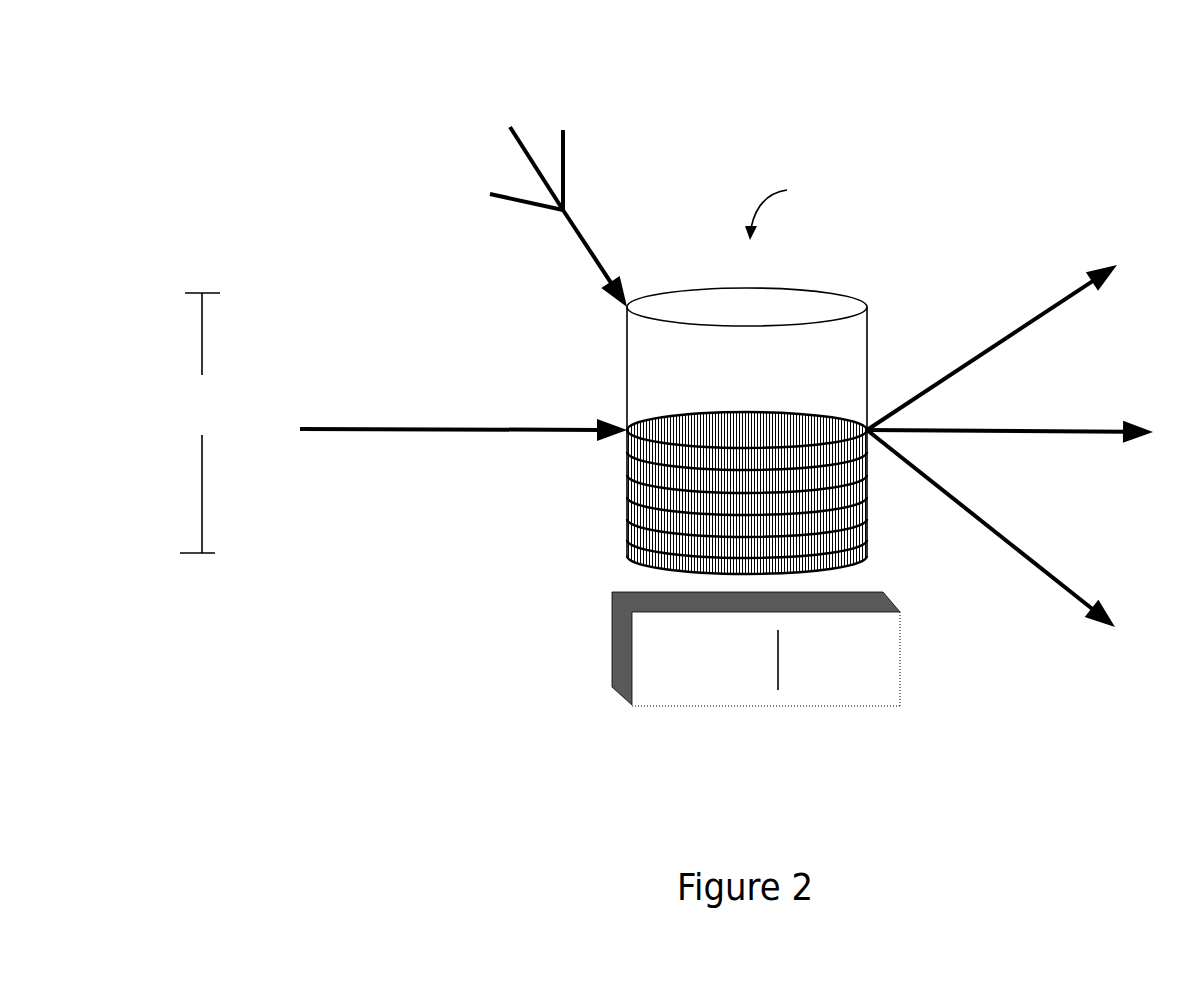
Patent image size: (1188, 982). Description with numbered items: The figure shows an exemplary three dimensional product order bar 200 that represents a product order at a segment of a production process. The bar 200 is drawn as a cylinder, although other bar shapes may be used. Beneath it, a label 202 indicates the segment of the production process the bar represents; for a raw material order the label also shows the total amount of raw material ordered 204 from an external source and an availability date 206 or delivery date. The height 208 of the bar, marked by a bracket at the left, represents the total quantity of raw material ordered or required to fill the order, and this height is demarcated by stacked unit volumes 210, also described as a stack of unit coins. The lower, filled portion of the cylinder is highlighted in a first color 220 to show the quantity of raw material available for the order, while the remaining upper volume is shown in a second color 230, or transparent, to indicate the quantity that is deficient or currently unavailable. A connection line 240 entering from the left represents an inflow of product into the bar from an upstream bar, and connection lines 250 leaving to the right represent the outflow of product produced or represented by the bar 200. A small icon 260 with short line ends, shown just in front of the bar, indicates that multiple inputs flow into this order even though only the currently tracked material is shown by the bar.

The bar 200 is at (794, 207).
The label 202 is at (650, 632).
The total amount of raw material ordered 204 is at (862, 680).
The availability date 206 is at (647, 678).
The height of the bar 208 is at (199, 423).
The unit volumes 210 is at (625, 547).
The first color 220 is at (737, 507).
The second color 230 is at (749, 362).
The connection line 240 is at (463, 417).
The connection lines 250 is at (1010, 446).
The small icon 260 is at (533, 182).